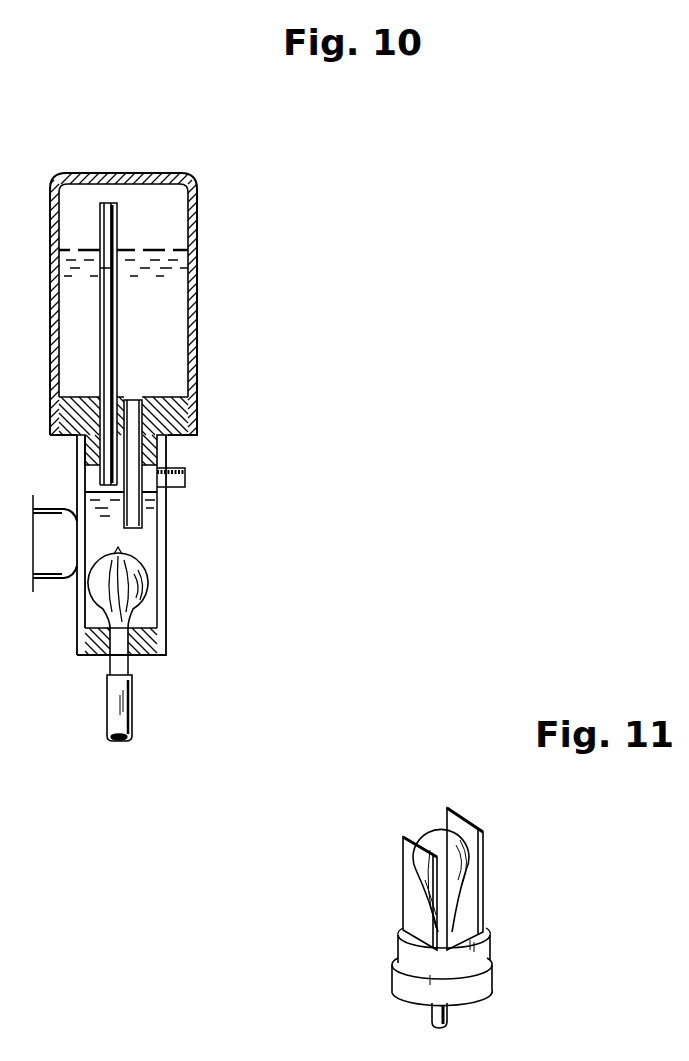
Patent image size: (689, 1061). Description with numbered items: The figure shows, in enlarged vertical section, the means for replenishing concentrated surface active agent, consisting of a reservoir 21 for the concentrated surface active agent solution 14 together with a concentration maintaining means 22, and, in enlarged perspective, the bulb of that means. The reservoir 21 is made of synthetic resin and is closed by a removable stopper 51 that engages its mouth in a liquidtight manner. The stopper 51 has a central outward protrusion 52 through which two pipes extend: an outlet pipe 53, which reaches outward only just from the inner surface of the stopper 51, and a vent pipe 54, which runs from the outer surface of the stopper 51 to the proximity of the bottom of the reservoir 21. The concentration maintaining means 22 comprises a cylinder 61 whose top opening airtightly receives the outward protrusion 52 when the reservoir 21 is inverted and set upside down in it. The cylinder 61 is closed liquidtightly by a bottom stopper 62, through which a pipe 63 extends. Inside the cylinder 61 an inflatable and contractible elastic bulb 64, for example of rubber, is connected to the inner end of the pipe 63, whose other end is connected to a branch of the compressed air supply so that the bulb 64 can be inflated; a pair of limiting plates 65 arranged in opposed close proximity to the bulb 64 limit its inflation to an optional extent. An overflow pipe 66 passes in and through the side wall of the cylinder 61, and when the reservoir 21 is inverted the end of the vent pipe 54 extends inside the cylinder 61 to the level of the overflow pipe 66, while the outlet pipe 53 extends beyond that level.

In FIG. 10, the concentrated surface active agent solution 14 is at (165, 308).
In FIG. 10, the reservoir 21 is at (193, 222).
In FIG. 10, the concentration maintaining means 22 is at (158, 548).
In FIG. 10, the removable stopper 51 is at (167, 397).
In FIG. 10, the central outward protrusion 52 is at (93, 458).
In FIG. 10, the outlet pipe 53 is at (143, 515).
In FIG. 10, the vent pipe 54 is at (100, 328).
In FIG. 10, the cylinder 61 is at (163, 607).
In FIG. 10, the bottom stopper 62 is at (148, 655).
In FIG. 11, the bottom stopper 62 is at (472, 995).
In FIG. 10, the pipe 63 is at (110, 717).
In FIG. 11, the pipe 63 is at (431, 1022).
In FIG. 10, the elastic bulb 64 is at (92, 602).
In FIG. 11, the elastic bulb 64 is at (432, 832).
In FIG. 11, the limiting plates 65 is at (483, 847).
In FIG. 10, the overflow pipe 66 is at (187, 472).